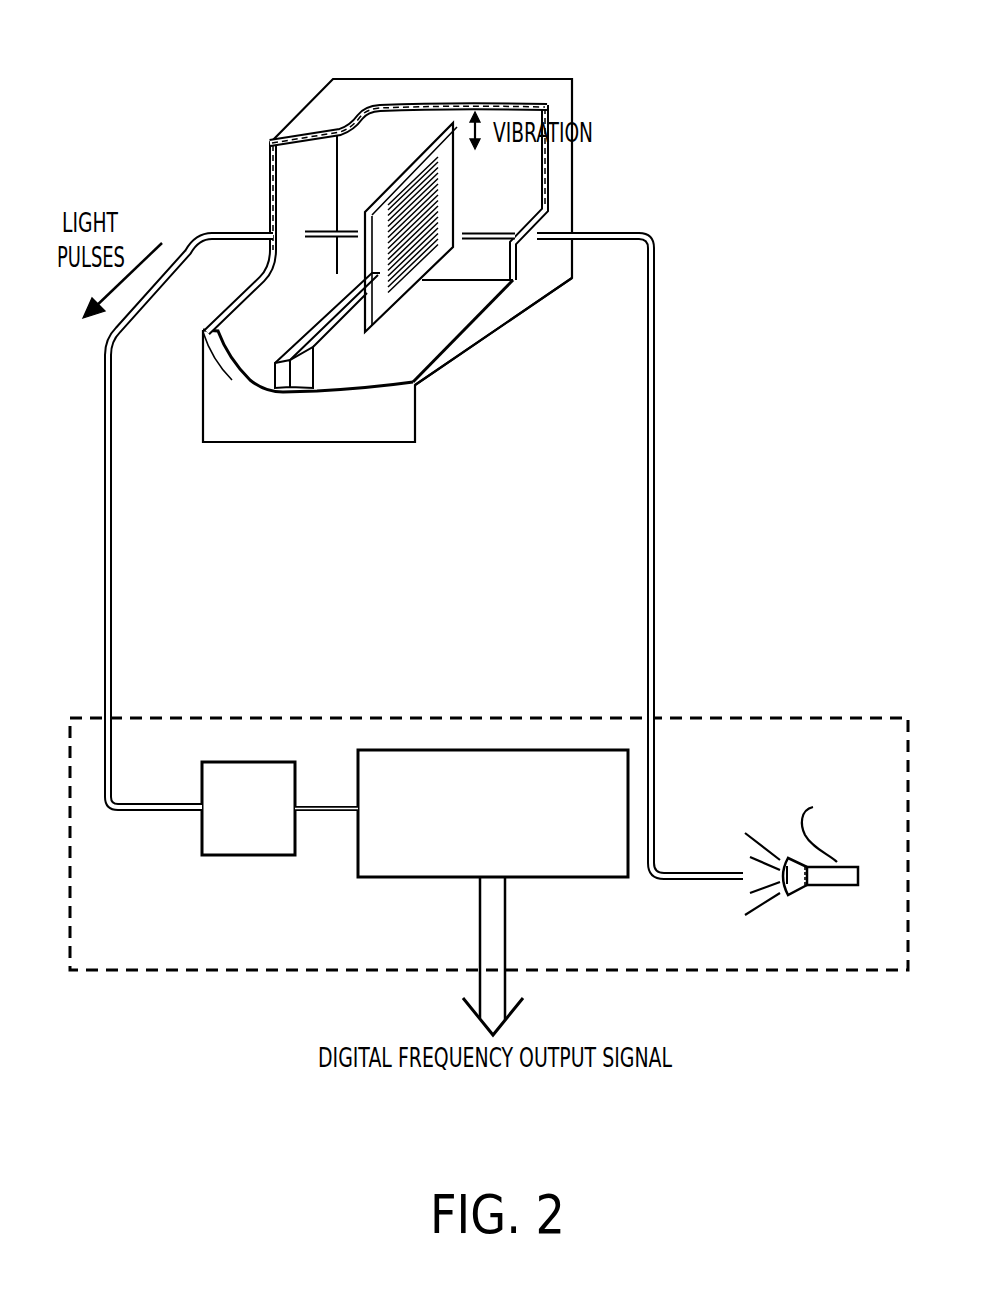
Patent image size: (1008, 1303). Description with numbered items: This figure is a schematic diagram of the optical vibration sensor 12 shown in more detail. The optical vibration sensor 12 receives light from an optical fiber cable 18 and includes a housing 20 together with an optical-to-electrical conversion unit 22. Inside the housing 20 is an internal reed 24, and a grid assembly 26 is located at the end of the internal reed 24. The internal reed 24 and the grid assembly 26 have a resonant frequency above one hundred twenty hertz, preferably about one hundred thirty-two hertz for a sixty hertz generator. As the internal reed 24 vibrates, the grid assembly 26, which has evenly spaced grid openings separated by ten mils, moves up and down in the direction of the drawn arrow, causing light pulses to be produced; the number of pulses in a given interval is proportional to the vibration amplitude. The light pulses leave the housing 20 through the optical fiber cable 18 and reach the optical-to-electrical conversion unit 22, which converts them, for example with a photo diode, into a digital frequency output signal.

The optical vibration sensor 12 is at (242, 188).
The optical fiber cable 18 is at (655, 467).
The housing 20 is at (468, 81).
The optical-to-electrical conversion unit 22 is at (788, 718).
The internal reed 24 is at (335, 325).
The grid assembly 26 is at (457, 147).